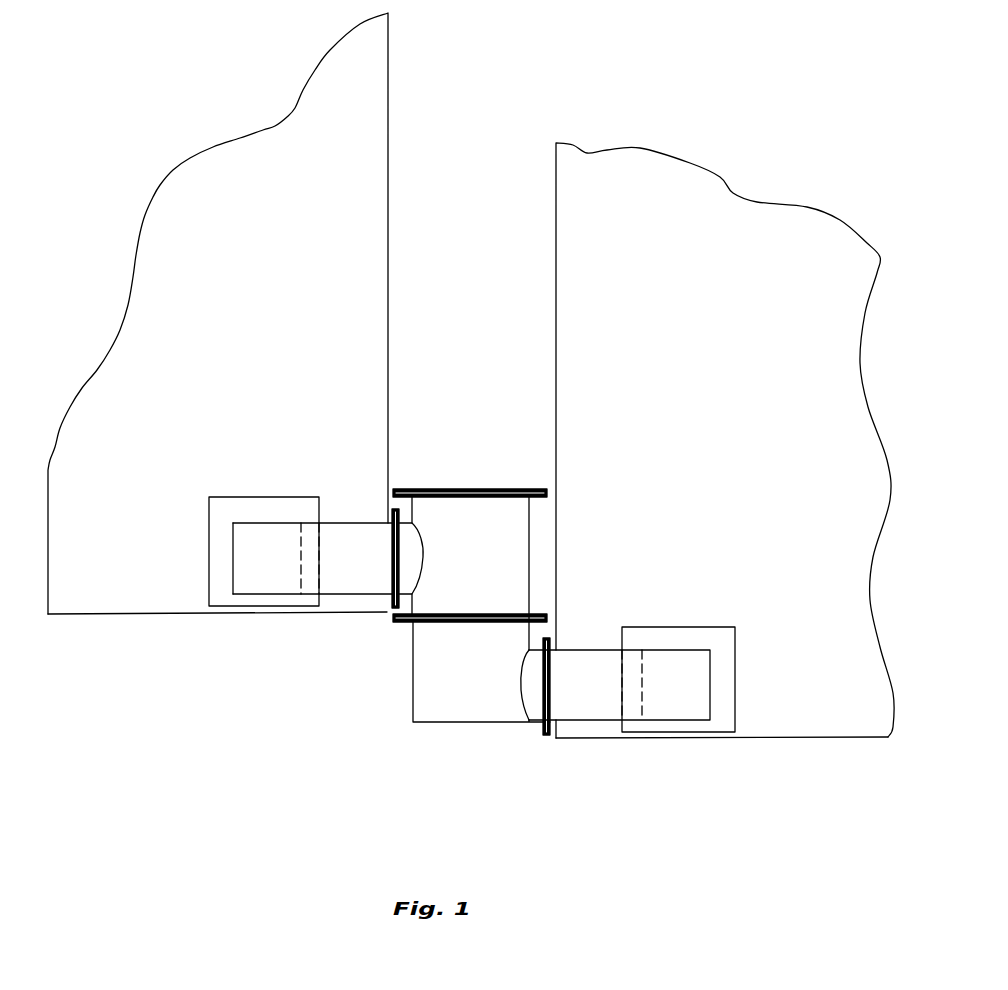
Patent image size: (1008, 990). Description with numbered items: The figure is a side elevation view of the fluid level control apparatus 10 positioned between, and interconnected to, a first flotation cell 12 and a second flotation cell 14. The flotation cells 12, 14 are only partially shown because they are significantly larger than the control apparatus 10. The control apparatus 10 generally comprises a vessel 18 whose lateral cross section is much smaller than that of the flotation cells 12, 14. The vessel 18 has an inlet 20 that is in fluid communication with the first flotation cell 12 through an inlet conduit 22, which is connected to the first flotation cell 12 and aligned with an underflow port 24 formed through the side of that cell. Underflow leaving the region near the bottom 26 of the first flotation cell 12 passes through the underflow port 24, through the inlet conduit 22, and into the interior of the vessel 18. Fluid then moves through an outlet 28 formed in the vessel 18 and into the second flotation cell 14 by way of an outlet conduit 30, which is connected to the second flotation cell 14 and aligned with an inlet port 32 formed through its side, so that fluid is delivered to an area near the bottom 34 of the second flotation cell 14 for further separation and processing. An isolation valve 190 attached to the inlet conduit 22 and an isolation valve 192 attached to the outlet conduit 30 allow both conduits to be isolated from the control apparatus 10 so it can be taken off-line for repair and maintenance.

The fluid level control apparatus 10 is at (377, 677).
The first flotation cell 12 is at (254, 332).
The second flotation cell 14 is at (736, 438).
The vessel 18 is at (482, 523).
The inlet 20 is at (419, 544).
The inlet conduit 22 is at (348, 577).
The underflow port 24 is at (268, 540).
The bottom of the first flotation cell 26 is at (135, 602).
The outlet 28 is at (522, 692).
The outlet conduit 30 is at (593, 702).
The inlet port 32 is at (673, 665).
The bottom of the second flotation cell 34 is at (760, 739).
The isolation valve 190 is at (390, 546).
The isolation valve 192 is at (552, 665).